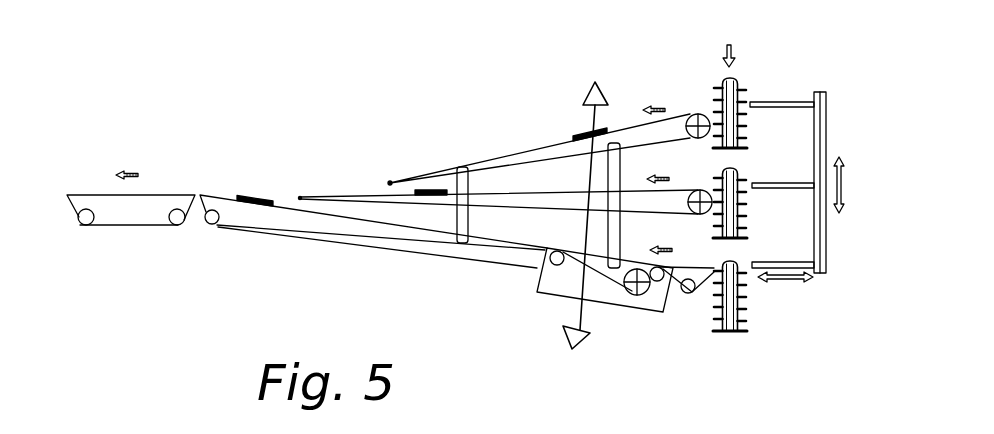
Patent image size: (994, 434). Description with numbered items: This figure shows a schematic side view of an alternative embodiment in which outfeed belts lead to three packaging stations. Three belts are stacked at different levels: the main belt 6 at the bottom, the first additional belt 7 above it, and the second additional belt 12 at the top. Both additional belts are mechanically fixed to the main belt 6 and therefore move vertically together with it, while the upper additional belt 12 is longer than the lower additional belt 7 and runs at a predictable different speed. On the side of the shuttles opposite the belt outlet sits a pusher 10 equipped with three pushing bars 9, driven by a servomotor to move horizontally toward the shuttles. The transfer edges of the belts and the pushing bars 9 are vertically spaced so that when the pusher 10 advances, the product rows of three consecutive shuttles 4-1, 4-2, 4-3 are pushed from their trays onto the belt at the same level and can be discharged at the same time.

The shuttle 4-1 is at (712, 90).
The shuttle 4-2 is at (718, 243).
The shuttle 4-3 is at (722, 333).
The main belt 6 is at (292, 218).
The first additional belt 7 is at (502, 205).
The pushing bars 9 is at (778, 101).
The pusher 10 is at (815, 63).
The second additional belt 12 is at (550, 150).